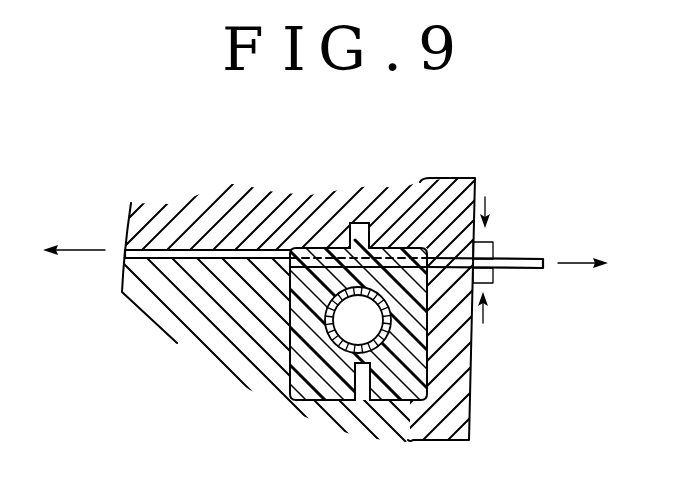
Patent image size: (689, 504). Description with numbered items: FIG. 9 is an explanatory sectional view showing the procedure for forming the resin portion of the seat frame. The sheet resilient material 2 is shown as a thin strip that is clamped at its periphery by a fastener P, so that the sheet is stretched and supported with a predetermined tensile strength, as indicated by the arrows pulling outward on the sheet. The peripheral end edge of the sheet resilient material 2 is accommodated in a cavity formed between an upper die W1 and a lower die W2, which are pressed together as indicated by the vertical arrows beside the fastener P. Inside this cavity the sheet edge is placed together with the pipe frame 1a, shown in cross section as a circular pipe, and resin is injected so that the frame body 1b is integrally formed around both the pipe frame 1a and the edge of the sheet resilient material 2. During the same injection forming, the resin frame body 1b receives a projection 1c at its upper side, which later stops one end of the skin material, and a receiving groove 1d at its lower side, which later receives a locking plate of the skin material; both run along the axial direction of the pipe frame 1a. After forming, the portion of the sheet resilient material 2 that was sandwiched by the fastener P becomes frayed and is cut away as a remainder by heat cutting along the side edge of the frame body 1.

The frame body 1 is at (297, 406).
The pipe frame 1a is at (288, 399).
The resin frame body 1b is at (298, 310).
The projections 1c is at (359, 225).
The receiving groove 1d is at (357, 403).
The sheet resilient material 2 is at (536, 262).
The fastener P is at (497, 242).
The upper die W1 is at (477, 183).
The lower die W2 is at (470, 372).